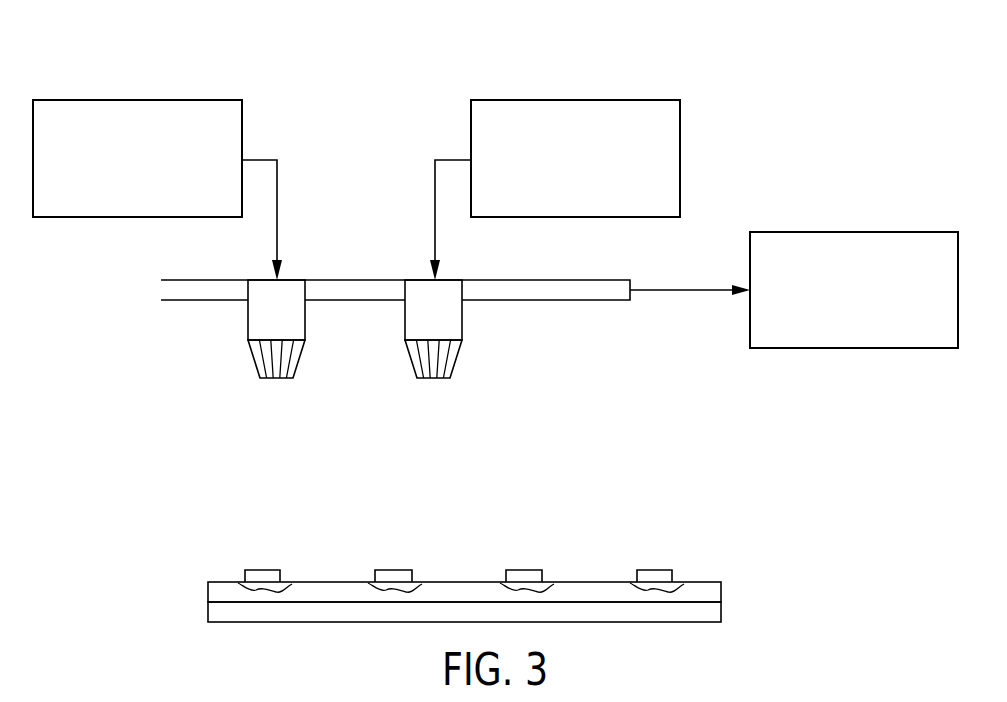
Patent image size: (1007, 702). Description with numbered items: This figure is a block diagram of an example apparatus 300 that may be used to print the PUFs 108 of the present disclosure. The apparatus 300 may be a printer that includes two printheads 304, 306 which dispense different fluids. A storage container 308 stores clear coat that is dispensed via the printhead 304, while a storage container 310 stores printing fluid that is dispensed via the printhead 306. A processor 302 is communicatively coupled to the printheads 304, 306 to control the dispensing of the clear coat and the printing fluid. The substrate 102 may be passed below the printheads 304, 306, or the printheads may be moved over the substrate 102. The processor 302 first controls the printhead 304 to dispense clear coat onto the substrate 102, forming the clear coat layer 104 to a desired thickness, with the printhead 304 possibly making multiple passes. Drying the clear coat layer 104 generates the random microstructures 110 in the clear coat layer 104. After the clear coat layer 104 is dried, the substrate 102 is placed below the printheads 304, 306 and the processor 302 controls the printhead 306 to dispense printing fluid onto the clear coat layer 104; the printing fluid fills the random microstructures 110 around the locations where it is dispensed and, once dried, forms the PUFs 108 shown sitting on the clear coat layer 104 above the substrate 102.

The apparatus 300 is at (822, 101).
The processor 302 is at (902, 232).
The printhead 304 is at (272, 380).
The printhead 306 is at (437, 380).
The storage container 308 is at (187, 100).
The storage container 310 is at (632, 100).
The substrate 102 is at (713, 609).
The clear coat layer 104 is at (722, 592).
The PUF 108 is at (263, 570).
The random microstructures 110 is at (243, 586).